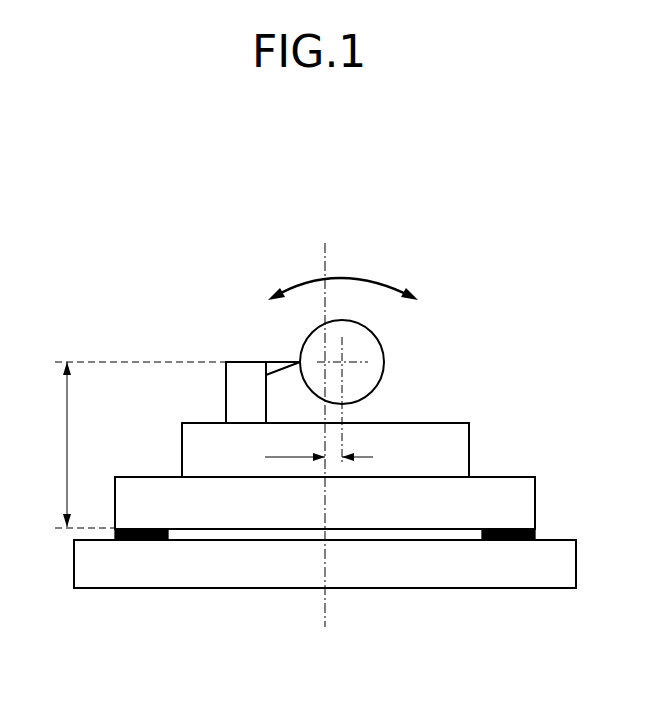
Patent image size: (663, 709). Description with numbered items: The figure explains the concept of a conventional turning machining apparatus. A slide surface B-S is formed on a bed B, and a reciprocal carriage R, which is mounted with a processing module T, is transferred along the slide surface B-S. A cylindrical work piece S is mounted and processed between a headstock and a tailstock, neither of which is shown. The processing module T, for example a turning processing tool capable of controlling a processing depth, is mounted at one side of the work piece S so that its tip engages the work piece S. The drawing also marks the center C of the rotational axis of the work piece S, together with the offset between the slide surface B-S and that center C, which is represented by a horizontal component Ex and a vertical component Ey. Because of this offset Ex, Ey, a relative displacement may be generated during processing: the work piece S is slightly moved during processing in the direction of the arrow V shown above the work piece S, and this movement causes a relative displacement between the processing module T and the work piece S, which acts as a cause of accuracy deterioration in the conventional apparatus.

The bed B is at (557, 577).
The reciprocal carriage R is at (497, 450).
The slide surface B-S is at (145, 527).
The processing module T is at (273, 361).
The work piece S is at (384, 363).
The center of rotational axis of the work piece C is at (342, 363).
The offset Ex is at (319, 445).
The offset Ey is at (126, 445).
The arrow direction V is at (343, 277).